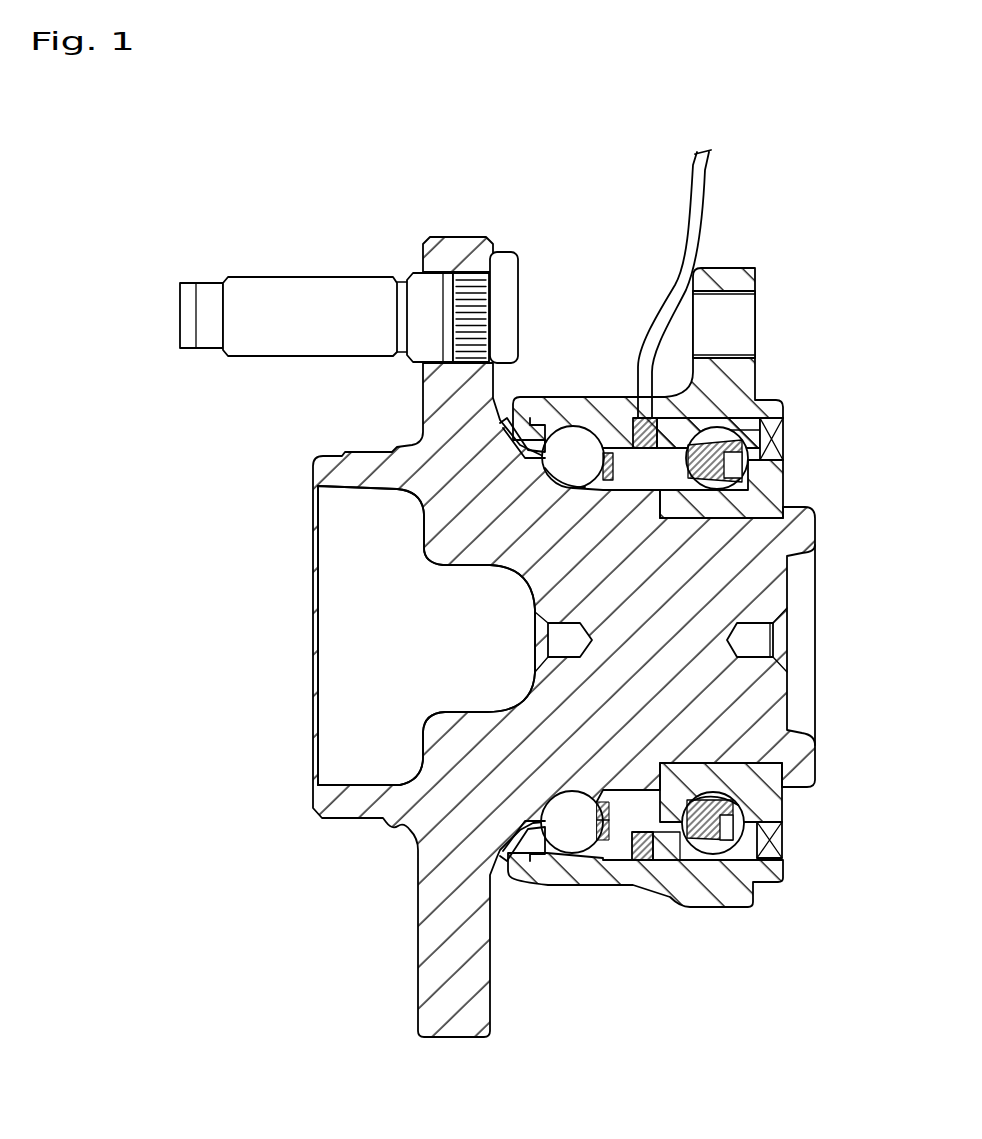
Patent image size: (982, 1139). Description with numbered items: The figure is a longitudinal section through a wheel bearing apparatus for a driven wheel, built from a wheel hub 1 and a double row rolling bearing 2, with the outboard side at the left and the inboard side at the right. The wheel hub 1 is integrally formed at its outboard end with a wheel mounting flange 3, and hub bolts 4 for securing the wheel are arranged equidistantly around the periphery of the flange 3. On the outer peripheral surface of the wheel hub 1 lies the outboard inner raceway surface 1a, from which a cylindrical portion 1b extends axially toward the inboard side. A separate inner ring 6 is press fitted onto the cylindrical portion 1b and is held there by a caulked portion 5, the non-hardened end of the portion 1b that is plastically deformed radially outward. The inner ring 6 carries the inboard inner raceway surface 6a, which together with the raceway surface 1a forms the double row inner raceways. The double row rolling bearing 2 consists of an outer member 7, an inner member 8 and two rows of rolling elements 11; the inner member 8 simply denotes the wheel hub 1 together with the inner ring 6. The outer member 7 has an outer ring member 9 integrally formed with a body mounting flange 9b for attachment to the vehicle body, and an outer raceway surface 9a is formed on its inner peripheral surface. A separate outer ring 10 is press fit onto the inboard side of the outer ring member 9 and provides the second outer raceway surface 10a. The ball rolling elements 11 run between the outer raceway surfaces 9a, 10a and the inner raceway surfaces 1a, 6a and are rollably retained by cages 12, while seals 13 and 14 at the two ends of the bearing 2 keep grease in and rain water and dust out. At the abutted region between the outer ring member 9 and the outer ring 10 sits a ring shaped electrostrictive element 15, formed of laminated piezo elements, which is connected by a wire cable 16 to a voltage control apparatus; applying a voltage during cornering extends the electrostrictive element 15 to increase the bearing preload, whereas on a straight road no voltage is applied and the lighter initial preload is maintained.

The wheel hub 1 is at (383, 467).
The inner raceway surface 1a is at (560, 470).
The cylindrical portion 1b is at (755, 493).
The double row rolling bearing 2 is at (668, 299).
The wheel mounting flange 3 is at (458, 244).
The hub bolt 4 is at (298, 290).
The caulked portion 5 is at (807, 532).
The inner ring 6 is at (767, 796).
The inner raceway surface 6a is at (748, 812).
The outer member 7 is at (600, 400).
The inner member 8 is at (467, 575).
The outer ring member 9 is at (621, 403).
The outer raceway surface 9a is at (581, 432).
The body mounting flange 9b is at (722, 276).
The outer ring 10 is at (707, 418).
The outer raceway surface 10a is at (765, 429).
The rolling elements 11 is at (573, 842).
The cage 12 is at (617, 826).
The seal 13 is at (513, 856).
The seal 14 is at (780, 850).
The electrostrictive element 15 is at (655, 422).
The wire cable 16 is at (690, 201).